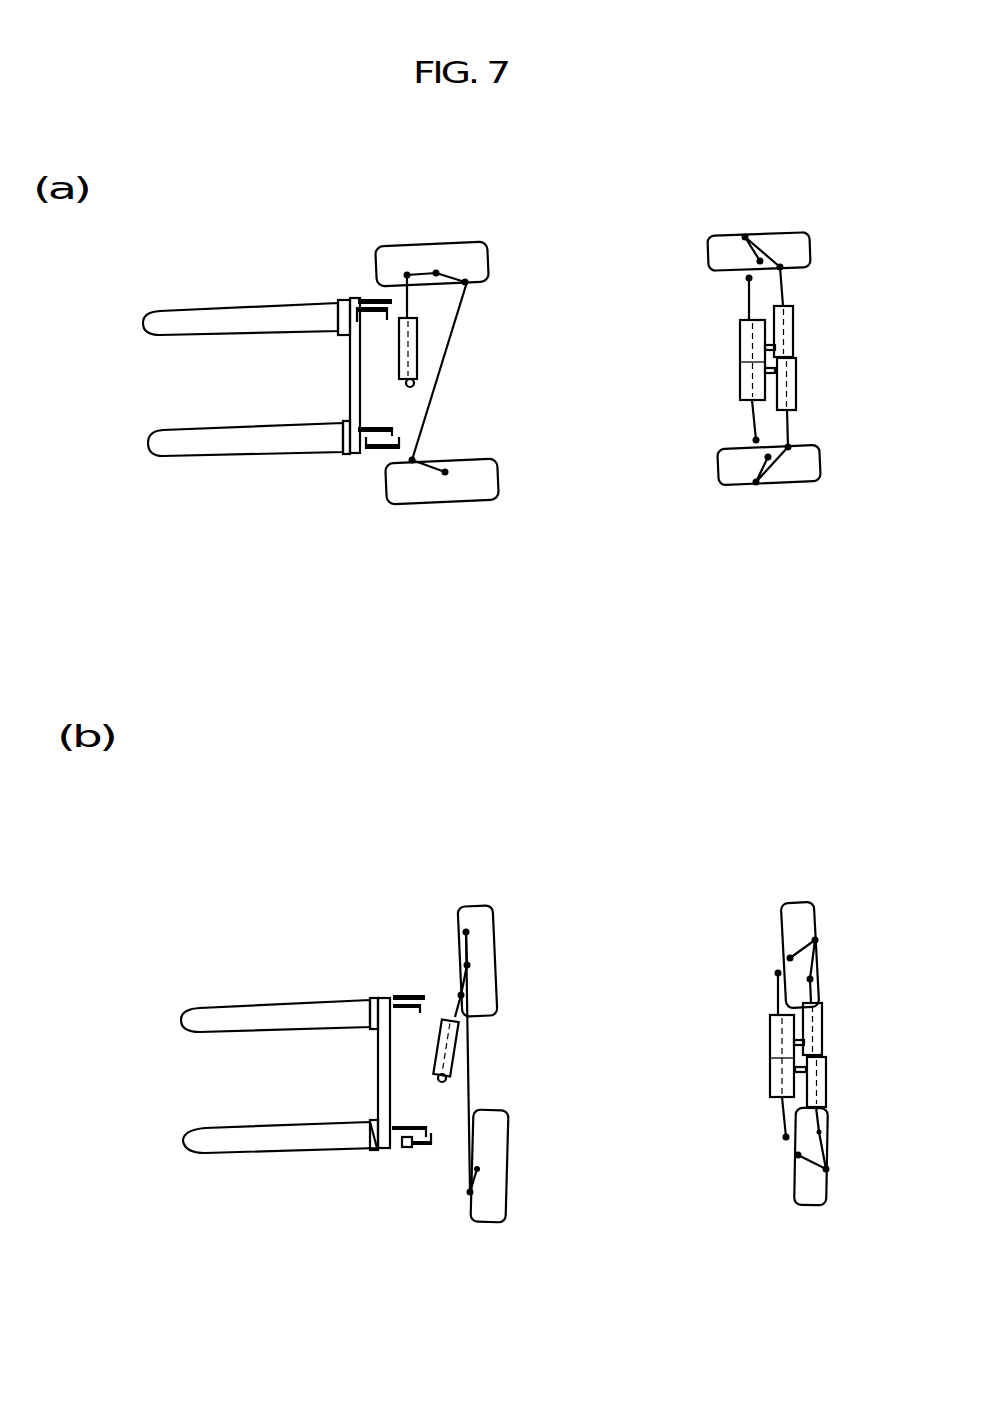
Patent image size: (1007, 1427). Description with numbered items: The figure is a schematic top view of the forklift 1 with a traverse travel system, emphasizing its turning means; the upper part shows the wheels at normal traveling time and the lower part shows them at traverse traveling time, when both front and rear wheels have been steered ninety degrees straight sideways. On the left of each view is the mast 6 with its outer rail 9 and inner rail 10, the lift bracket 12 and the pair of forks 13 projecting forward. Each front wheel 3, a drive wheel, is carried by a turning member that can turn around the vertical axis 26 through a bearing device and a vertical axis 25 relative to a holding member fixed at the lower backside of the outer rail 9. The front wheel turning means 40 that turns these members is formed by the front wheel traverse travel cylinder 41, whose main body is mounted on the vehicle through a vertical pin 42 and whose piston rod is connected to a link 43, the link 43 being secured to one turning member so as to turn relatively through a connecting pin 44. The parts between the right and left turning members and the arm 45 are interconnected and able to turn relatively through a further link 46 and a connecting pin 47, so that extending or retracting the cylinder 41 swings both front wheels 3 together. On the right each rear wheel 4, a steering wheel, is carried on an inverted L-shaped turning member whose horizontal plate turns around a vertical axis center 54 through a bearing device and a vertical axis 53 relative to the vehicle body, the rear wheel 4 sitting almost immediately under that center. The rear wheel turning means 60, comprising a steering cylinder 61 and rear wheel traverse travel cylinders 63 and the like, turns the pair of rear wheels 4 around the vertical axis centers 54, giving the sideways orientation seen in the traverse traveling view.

The forklift 1 is at (647, 240).
The front wheel 3 is at (452, 245).
The rear wheel 4 is at (780, 240).
The mast 6 is at (357, 294).
The outer rail 9 is at (377, 449).
The inner rail 10 is at (380, 431).
The lift bracket 12 is at (352, 354).
The fork 13 is at (192, 308).
The vertical axis 25 is at (518, 726).
The vertical axis 26 is at (445, 472).
The front wheel turning means 40 is at (458, 362).
The front wheel traverse travel cylinder 41 is at (417, 340).
The vertical pin 42 is at (414, 385).
The link 43 is at (436, 273).
The connecting pin 44 is at (407, 275).
The arm 45 is at (458, 280).
The link 46 is at (427, 423).
The connecting pin 47 is at (412, 460).
The vertical axis 53 is at (745, 703).
The vertical axis center 54 is at (768, 457).
The rear wheel turning means 60 is at (720, 362).
The steering cylinder 61 is at (742, 388).
The rear wheel traverse travel cylinder 63 is at (794, 381).